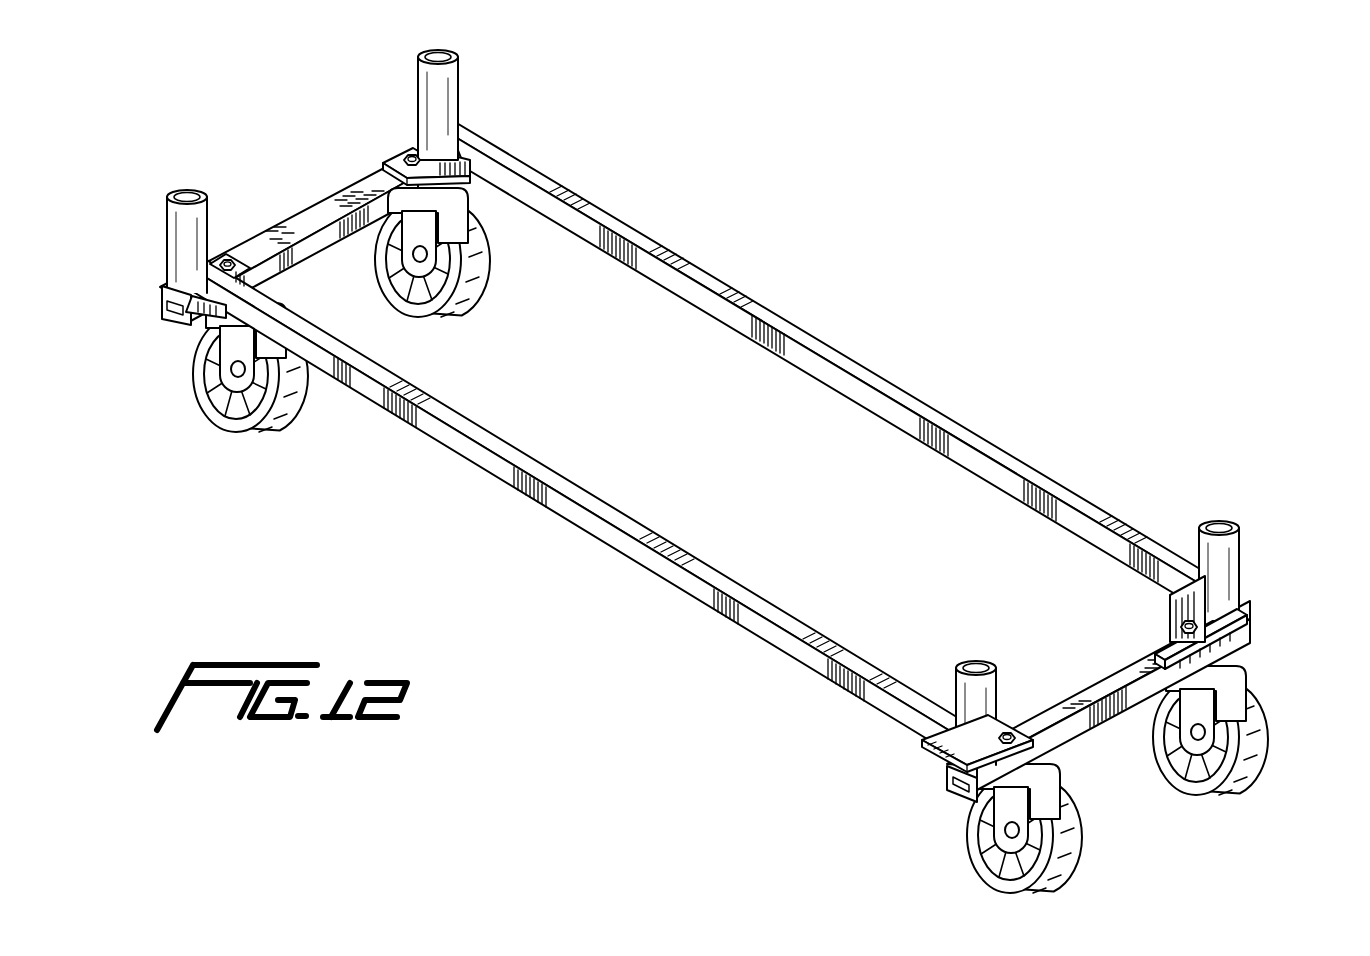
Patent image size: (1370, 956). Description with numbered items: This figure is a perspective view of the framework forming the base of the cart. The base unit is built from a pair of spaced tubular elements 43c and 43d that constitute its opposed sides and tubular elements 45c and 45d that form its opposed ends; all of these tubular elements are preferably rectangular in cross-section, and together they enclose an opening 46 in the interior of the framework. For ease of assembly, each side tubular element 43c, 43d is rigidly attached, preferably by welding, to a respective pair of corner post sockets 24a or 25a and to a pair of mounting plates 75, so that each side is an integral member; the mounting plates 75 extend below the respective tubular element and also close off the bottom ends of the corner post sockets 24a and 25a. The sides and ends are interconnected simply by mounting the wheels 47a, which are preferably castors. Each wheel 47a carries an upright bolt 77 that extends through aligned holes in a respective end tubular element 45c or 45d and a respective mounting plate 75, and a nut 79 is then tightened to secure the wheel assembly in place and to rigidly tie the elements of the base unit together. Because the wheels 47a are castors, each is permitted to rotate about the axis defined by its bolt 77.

The corner post socket 24a is at (458, 75).
The corner post socket 25a is at (210, 203).
The tubular element 43c is at (815, 340).
The tubular element 43d is at (577, 490).
The tubular element 45c is at (1065, 722).
The tubular element 45d is at (330, 247).
The opening 46 is at (705, 471).
The wheel 47a is at (1258, 712).
The mounting plate 75 is at (1185, 598).
The bolt 77 is at (1181, 625).
The nut 79 is at (1249, 618).